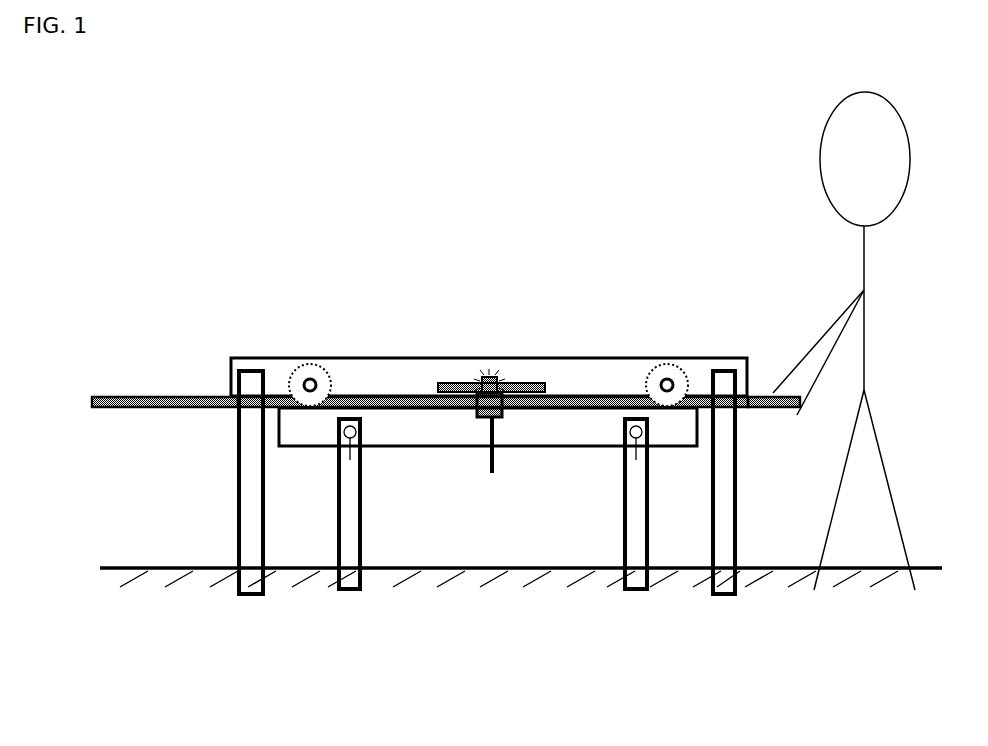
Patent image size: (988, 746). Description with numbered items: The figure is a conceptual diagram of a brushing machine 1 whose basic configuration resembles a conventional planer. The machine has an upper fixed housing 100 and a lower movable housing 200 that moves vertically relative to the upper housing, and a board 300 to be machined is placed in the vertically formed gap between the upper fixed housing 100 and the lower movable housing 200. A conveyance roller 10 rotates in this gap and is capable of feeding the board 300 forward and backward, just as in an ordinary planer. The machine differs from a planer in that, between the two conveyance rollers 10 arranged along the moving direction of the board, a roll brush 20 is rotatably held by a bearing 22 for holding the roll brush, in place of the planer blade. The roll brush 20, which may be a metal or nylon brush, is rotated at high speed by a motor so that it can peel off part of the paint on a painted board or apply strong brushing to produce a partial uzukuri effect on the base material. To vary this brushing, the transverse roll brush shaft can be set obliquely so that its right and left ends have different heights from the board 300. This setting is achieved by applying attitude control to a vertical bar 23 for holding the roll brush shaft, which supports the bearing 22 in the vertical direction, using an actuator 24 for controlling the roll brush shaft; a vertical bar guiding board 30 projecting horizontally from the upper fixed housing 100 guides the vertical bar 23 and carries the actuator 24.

The brushing machine 1 is at (327, 277).
The upper fixed housing 100 is at (408, 372).
The conveyance roller 10 is at (303, 380).
The roll brush 20 is at (498, 377).
The bearing for holding roll brush 22 is at (467, 410).
The vertical bar for holding roll brush shaft 23 is at (489, 474).
The actuator for controlling roll brush shaft 24 is at (497, 415).
The vertical bar guiding board 30 is at (560, 398).
The lower movable housing 200 is at (541, 432).
The board 300 is at (167, 410).